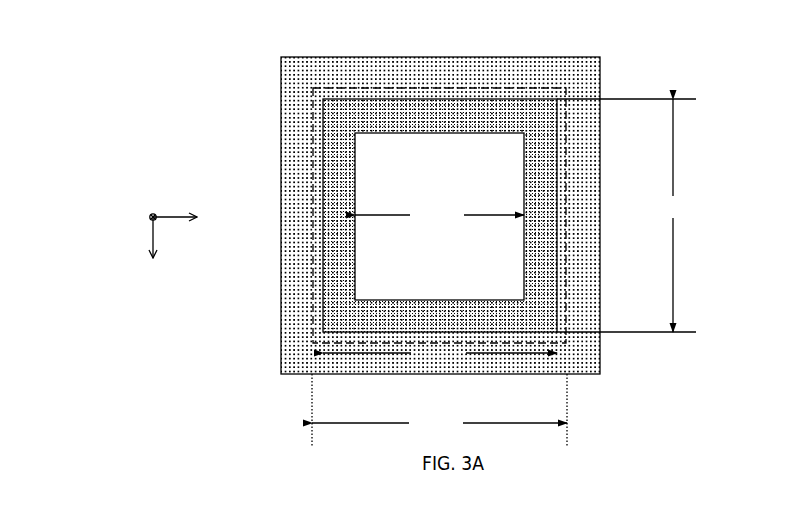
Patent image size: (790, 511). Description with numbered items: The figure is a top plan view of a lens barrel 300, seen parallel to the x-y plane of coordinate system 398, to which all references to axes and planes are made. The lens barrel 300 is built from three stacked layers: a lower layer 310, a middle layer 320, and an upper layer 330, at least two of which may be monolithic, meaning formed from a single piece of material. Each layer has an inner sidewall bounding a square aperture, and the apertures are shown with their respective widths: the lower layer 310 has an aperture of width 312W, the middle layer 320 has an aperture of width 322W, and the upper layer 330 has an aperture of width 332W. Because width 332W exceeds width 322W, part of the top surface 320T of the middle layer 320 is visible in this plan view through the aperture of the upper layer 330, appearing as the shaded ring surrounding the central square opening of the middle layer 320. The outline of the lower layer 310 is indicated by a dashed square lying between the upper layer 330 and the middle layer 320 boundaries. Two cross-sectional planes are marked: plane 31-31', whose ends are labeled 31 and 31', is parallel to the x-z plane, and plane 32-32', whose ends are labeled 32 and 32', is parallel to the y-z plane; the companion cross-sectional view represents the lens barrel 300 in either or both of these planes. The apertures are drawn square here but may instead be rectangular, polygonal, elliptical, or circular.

The lens barrel 300 is at (165, 69).
The lower layer 310 is at (313, 113).
The middle layer 320 is at (524, 172).
The top surface 320T is at (440, 215).
The upper layer 330 is at (440, 215).
The coordinate system 398 is at (130, 223).
The cross-sectional plane 31-31' 31 is at (261, 245).
The cross-sectional plane 31- 31' is at (620, 245).
The cross-sectional plane 32-32' 32 is at (475, 396).
The cross-sectional plane 32- 32' is at (478, 35).
The width of aperture 322 322W is at (439, 213).
The width of aperture 332 332W is at (512, 233).
The width of aperture 312 312W is at (439, 410).